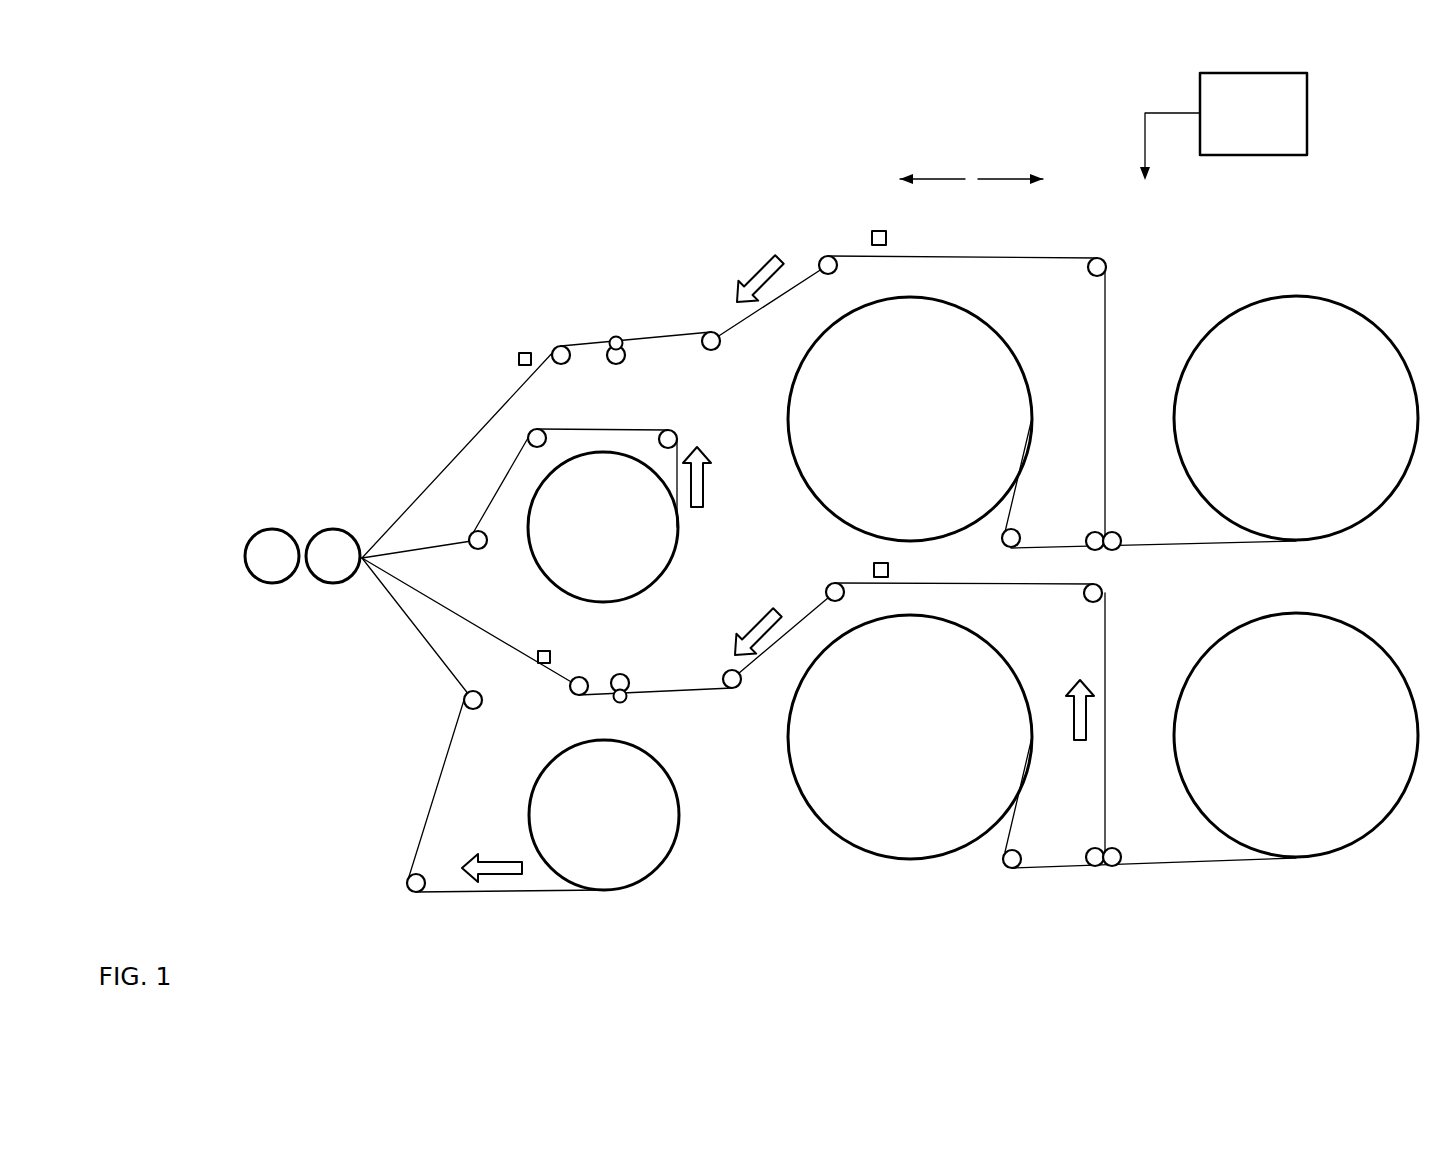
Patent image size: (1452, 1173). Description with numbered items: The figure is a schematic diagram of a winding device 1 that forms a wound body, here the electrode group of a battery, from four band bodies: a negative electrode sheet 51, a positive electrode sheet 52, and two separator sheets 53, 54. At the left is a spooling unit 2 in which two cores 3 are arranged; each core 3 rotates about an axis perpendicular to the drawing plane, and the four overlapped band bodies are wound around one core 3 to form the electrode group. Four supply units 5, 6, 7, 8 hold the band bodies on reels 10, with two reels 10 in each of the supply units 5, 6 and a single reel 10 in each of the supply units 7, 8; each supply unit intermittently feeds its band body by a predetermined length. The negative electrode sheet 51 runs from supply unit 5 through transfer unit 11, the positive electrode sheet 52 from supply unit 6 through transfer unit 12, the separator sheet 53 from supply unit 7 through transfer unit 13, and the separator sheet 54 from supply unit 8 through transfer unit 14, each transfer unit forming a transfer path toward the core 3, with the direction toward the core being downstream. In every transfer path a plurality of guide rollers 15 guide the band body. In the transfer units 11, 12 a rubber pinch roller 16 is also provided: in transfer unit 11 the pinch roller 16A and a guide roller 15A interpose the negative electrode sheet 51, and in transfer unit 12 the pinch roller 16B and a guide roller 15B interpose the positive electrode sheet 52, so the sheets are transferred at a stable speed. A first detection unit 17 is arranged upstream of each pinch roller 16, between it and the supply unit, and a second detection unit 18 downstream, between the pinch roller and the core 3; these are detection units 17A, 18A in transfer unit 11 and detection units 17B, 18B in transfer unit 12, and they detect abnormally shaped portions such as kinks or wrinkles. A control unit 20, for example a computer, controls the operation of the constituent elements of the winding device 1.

The winding device 1 is at (454, 137).
The spooling unit 2 is at (316, 478).
The core 3 is at (272, 583).
The supply unit 5 is at (1203, 567).
The supply unit 6 is at (1183, 897).
The supply unit 7 is at (705, 548).
The supply unit 8 is at (635, 920).
The reel 10 is at (1010, 355).
The transfer unit 11 is at (1150, 255).
The transfer unit 12 is at (1130, 695).
The transfer unit 13 is at (560, 464).
The transfer unit 14 is at (510, 768).
The guide roller 15 is at (783, 578).
The guide roller 15A is at (624, 358).
The guide roller 15B is at (619, 674).
The pinch roller 16 is at (657, 505).
The pinch roller 16A is at (617, 337).
The pinch roller 16B is at (627, 700).
The detection unit 17 is at (941, 397).
The detection unit 17A is at (890, 238).
The detection unit 17B is at (890, 570).
The detection unit 18 is at (498, 477).
The detection unit 18A is at (522, 352).
The detection unit 18B is at (541, 650).
The control unit 20 is at (1310, 112).
The negative electrode sheet 51 is at (1108, 300).
The positive electrode sheet 52 is at (1108, 628).
The separator sheet 53 is at (597, 429).
The separator sheet 54 is at (443, 791).